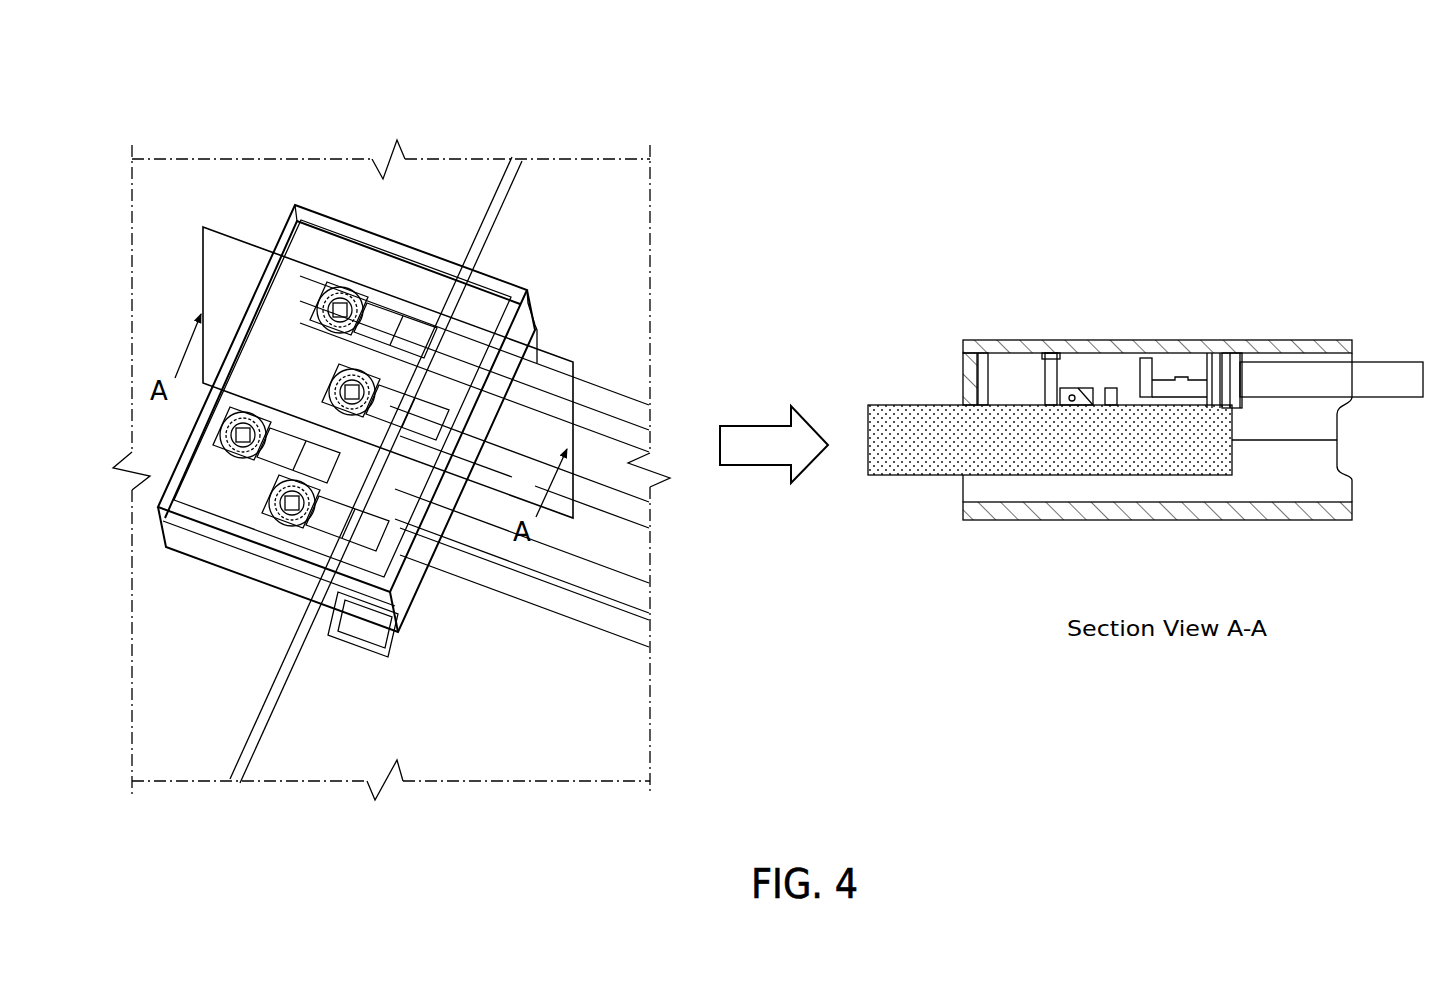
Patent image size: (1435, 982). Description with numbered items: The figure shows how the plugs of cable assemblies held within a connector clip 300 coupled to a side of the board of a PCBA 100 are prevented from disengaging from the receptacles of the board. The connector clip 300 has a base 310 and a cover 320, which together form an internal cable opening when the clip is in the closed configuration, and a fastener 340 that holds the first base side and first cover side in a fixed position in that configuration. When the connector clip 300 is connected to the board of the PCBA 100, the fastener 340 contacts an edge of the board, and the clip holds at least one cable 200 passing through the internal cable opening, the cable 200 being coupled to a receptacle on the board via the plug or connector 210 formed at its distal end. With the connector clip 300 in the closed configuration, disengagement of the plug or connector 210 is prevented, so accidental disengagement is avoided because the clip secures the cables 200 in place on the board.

The PCBA 100 is at (247, 694).
The cable 200 is at (622, 495).
The plug or connector 210 is at (268, 497).
The connector clip 300 is at (215, 108).
The base 310 is at (1160, 522).
The cover 320 is at (1012, 337).
The fastener 340 is at (417, 620).